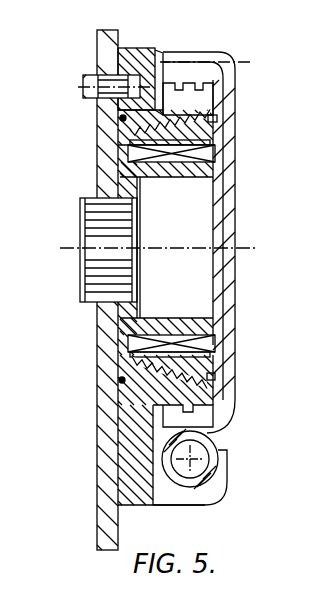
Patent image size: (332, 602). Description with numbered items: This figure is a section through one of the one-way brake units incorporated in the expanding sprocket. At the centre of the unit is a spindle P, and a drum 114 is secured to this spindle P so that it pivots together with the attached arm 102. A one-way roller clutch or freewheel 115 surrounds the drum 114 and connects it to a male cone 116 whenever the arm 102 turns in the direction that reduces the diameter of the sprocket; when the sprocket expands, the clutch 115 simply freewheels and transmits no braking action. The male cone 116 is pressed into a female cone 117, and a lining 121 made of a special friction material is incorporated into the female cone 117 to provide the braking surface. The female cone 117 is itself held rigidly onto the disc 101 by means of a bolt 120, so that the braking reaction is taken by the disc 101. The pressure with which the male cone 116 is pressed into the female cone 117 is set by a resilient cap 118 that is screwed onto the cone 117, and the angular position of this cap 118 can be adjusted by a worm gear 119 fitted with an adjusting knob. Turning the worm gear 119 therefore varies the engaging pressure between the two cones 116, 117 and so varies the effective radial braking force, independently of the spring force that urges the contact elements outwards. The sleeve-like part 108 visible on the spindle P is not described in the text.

The disc 101 is at (112, 52).
The arm 102 is at (97, 322).
The sleeve 108 is at (103, 278).
The drum 114 is at (190, 328).
The one-way roller clutch 115 is at (210, 153).
The male cone 116 is at (185, 362).
The female cone 117 is at (128, 482).
The resilient cap 118 is at (217, 418).
The worm gear 119 is at (208, 465).
The bolt 120 is at (120, 90).
The lining 121 is at (120, 383).
The spindle P is at (100, 235).